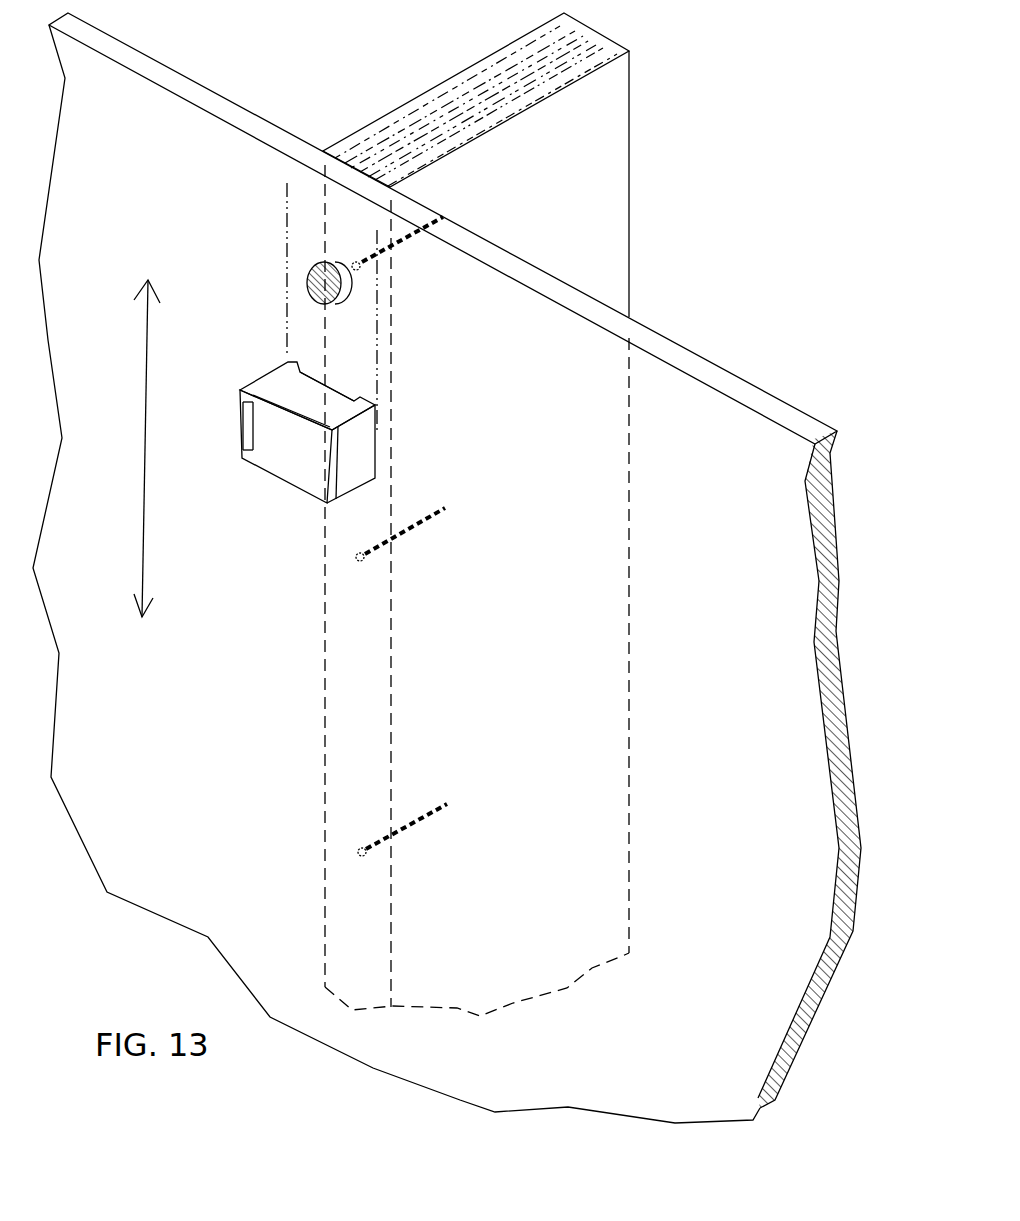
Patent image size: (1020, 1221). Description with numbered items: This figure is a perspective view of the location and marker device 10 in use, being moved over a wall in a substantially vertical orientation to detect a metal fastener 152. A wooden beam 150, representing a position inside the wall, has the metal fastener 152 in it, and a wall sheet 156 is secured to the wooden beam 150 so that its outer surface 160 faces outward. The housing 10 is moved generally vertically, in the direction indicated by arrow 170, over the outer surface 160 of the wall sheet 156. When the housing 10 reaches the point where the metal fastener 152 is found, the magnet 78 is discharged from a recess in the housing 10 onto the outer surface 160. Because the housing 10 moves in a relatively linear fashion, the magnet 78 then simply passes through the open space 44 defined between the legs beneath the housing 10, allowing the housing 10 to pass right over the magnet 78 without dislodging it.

The location and marker device 10 is at (270, 468).
The open channel or space 44 is at (358, 400).
The magnet 78 is at (306, 271).
The wooden beam 150 is at (617, 112).
The metal fastener 152 is at (402, 243).
The wall sheet 156 is at (675, 357).
The outer surface 160 is at (694, 527).
The arrow 170 is at (155, 562).